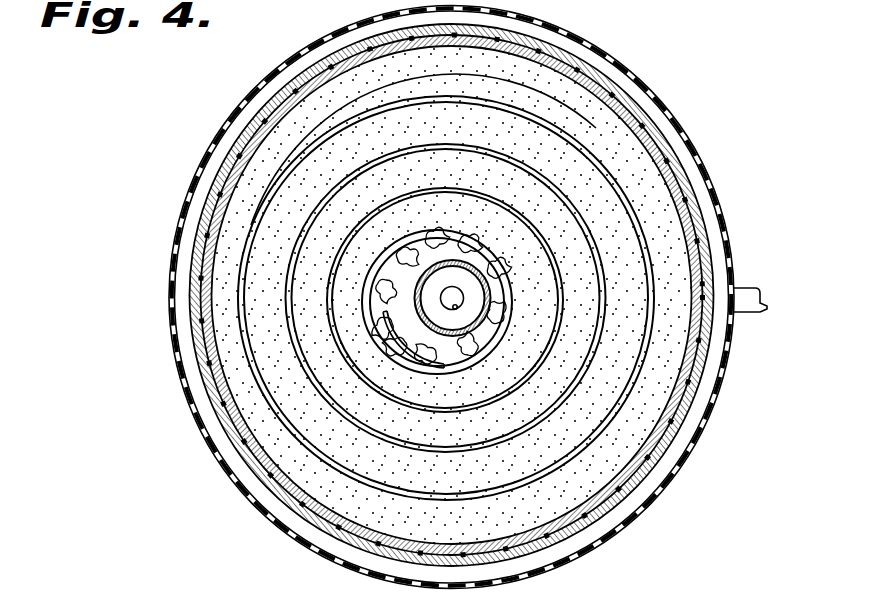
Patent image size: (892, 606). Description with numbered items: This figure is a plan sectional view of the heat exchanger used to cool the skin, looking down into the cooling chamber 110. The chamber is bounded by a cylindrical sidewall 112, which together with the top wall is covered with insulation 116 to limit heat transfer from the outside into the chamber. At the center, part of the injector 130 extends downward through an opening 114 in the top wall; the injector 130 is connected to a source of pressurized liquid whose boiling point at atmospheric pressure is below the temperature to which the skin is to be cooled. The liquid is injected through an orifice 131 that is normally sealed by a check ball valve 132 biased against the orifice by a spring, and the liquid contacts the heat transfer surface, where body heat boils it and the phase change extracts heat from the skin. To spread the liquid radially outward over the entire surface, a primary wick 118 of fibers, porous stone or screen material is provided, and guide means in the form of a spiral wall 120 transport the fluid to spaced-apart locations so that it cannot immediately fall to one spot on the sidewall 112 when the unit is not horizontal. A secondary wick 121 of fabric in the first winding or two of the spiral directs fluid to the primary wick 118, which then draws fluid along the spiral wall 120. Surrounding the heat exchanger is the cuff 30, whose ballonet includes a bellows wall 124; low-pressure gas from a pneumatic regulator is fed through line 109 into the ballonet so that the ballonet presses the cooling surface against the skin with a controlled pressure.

The cuff 30 is at (150, 321).
The line 109 is at (751, 312).
The cooling chamber 110 is at (286, 145).
The cylindrical sidewall 112 is at (231, 372).
The opening 114 is at (423, 270).
The insulation 116 is at (255, 465).
The wick 118 is at (600, 396).
The spiral wall 120 is at (248, 252).
The secondary wick 121 is at (486, 338).
The bellows wall 124 is at (607, 57).
The injector 130 is at (494, 287).
The orifice 131 is at (456, 309).
The check ball valve 132 is at (452, 290).